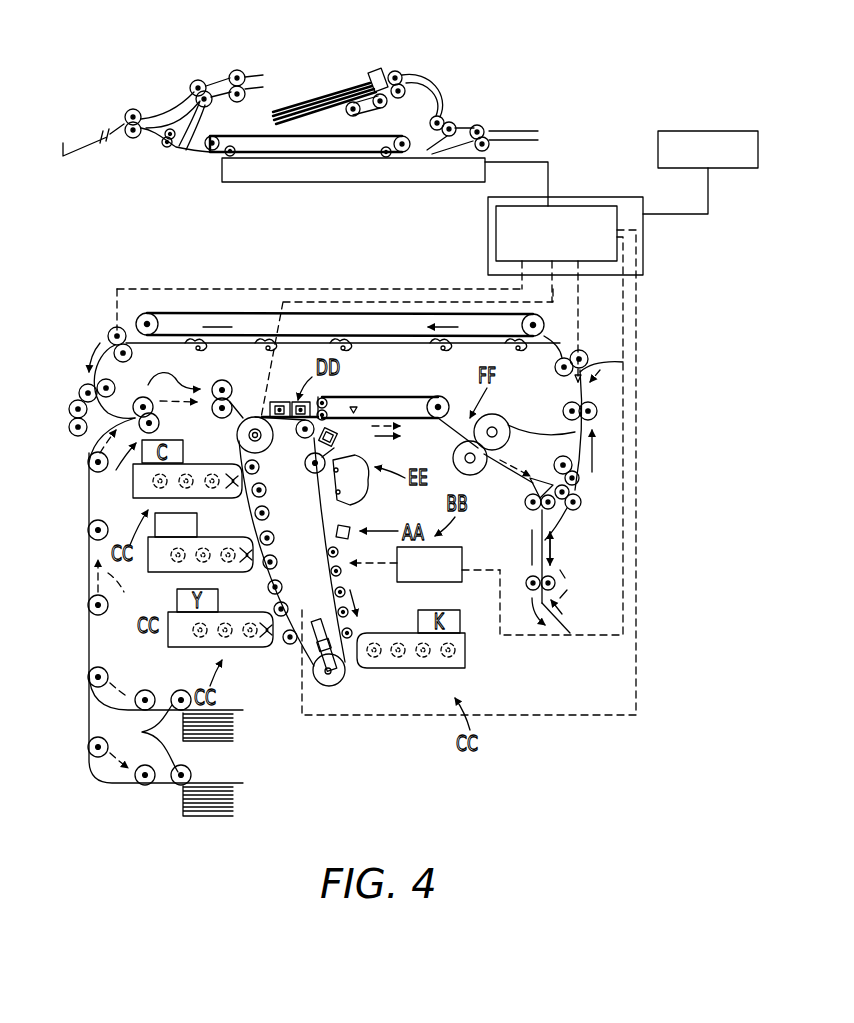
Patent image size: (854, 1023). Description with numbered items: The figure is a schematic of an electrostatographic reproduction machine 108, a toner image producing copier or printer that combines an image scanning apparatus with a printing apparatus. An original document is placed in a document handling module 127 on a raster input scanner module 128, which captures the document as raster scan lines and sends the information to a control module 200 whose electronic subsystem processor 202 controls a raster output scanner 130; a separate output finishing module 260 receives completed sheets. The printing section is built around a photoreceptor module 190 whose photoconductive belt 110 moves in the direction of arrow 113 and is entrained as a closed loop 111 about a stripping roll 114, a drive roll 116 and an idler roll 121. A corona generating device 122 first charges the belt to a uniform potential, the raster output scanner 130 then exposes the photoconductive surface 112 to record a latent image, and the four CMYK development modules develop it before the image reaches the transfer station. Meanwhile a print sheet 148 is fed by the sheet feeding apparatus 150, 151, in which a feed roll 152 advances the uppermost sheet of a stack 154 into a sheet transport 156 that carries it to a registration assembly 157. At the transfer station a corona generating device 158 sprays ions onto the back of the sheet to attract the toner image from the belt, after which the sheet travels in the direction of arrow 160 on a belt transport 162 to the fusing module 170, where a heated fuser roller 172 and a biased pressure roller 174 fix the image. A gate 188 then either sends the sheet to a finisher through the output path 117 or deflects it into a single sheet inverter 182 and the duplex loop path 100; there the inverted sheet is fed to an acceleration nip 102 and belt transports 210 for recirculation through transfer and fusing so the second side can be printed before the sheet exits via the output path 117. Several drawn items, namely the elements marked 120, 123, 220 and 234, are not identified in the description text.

The duplex loop path 100 is at (360, 280).
The acceleration nip 102 is at (112, 328).
The electrostatographic reproduction machine 108 is at (323, 65).
The photoconductive belt 110 is at (346, 580).
The closed loop 111 is at (277, 572).
The photoconductive surface 112 is at (300, 652).
The arrow 113 is at (352, 600).
The stripping roll 114 is at (305, 467).
The drive roll 116 is at (238, 431).
The output path 117 is at (608, 364).
The tensioning roller 120 is at (345, 679).
The idler roll 121 is at (336, 443).
The corona generating device 122 is at (352, 528).
The belt rollers 123 is at (266, 490).
The document handling module 127 is at (478, 72).
The raster input scanner module 128 is at (290, 182).
The raster output scanner 130 is at (450, 582).
The print sheet 148 is at (168, 585).
The sheet feeding apparatus 150 is at (172, 693).
The sheet feeding apparatus 151 is at (175, 795).
The feed roll 152 is at (145, 737).
The stack 154 is at (243, 710).
The sheet transport 156 is at (90, 653).
The registration assembly 157 is at (233, 390).
The corona generating device 158 is at (326, 398).
The arrow 160 is at (380, 440).
The belt transport 162 is at (371, 397).
The fusing module 170 is at (455, 472).
The heated fuser roller 172 is at (525, 518).
The pressure roller 174 is at (512, 432).
The single sheet inverter 182 is at (531, 586).
The gate 188 is at (577, 370).
The photoreceptor module 190 is at (247, 505).
The control module 200 is at (588, 197).
The electronic subsystem processor 202 is at (496, 237).
The belt transports 210 is at (188, 313).
The sheet entry path 220 is at (112, 457).
The gate 234 is at (526, 500).
The output finishing module 260 is at (708, 131).